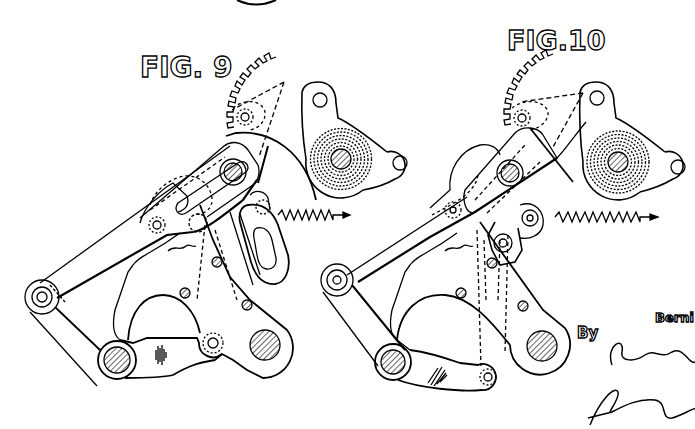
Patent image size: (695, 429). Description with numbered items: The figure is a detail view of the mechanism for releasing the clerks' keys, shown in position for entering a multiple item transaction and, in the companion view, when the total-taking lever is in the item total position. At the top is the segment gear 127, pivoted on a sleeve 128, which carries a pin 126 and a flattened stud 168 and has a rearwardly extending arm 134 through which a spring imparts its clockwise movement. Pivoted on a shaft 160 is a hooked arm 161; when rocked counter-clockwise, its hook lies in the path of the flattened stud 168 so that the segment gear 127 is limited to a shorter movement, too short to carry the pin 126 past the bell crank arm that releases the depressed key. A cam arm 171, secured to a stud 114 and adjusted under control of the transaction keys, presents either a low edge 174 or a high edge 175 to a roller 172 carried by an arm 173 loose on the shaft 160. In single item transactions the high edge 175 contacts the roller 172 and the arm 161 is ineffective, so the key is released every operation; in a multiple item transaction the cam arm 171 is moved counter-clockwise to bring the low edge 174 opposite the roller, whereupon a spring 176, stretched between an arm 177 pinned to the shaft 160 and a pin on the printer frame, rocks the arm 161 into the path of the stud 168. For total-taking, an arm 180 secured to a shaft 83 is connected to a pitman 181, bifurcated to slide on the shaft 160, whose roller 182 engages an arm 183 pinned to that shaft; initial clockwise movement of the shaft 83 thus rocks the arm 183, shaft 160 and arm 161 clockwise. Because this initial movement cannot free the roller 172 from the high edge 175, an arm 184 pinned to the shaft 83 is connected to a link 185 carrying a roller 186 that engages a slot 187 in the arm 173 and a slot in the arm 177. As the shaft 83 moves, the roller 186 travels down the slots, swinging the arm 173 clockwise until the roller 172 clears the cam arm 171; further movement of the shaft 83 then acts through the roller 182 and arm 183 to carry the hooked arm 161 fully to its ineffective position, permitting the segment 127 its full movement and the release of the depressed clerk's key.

In FIG. 9, the shaft 83 is at (105, 372).
In FIG. 10, the shaft 83 is at (385, 350).
In FIG. 9, the stud 114 is at (265, 360).
In FIG. 10, the stud 114 is at (545, 362).
In FIG. 9, the pin 126 is at (328, 88).
In FIG. 10, the pin 126 is at (606, 97).
In FIG. 9, the segment gear 127 is at (302, 93).
In FIG. 10, the segment gear 127 is at (582, 91).
In FIG. 9, the sleeve 128 is at (334, 137).
In FIG. 10, the sleeve 128 is at (613, 132).
In FIG. 9, the rearwardly extending arm 134 is at (401, 152).
In FIG. 10, the rearwardly extending arm 134 is at (683, 152).
In FIG. 9, the shaft 160 is at (247, 170).
In FIG. 10, the shaft 160 is at (532, 208).
In FIG. 9, the arm 161 is at (227, 137).
In FIG. 10, the arm 161 is at (563, 183).
In FIG. 9, the flattened stud 168 is at (240, 115).
In FIG. 10, the flattened stud 168 is at (516, 113).
In FIG. 9, the cam arm 171 is at (190, 312).
In FIG. 10, the cam arm 171 is at (467, 312).
In FIG. 9, the roller 172 is at (212, 261).
In FIG. 10, the roller 172 is at (482, 298).
In FIG. 9, the arm 173 is at (283, 243).
In FIG. 10, the arm 173 is at (520, 252).
In FIG. 9, the low edge 174 is at (171, 252).
In FIG. 10, the low edge 174 is at (446, 255).
In FIG. 9, the high edge 175 is at (117, 308).
In FIG. 10, the high edge 175 is at (394, 290).
In FIG. 9, the spring 176 is at (289, 213).
In FIG. 10, the spring 176 is at (592, 224).
In FIG. 9, the arm 177 is at (256, 288).
In FIG. 10, the arm 177 is at (538, 238).
In FIG. 9, the arm 180 is at (68, 344).
In FIG. 10, the arm 180 is at (358, 341).
In FIG. 9, the pitman 181 is at (93, 263).
In FIG. 10, the pitman 181 is at (420, 220).
In FIG. 9, the roller 182 is at (150, 222).
In FIG. 10, the roller 182 is at (415, 202).
In FIG. 9, the arm 183 is at (172, 183).
In FIG. 10, the arm 183 is at (462, 173).
In FIG. 9, the arm 184 is at (185, 362).
In FIG. 10, the arm 184 is at (452, 390).
In FIG. 9, the link 185 is at (228, 320).
In FIG. 10, the link 185 is at (483, 342).
In FIG. 9, the roller 186 is at (258, 198).
In FIG. 10, the roller 186 is at (525, 265).
In FIG. 9, the slot 187 is at (280, 233).